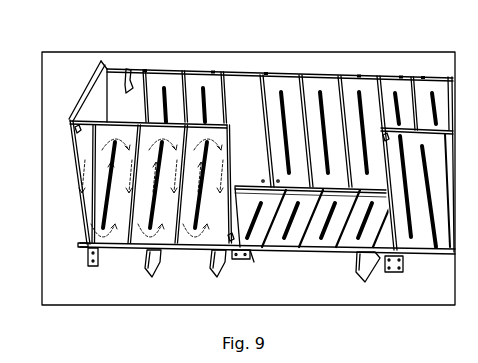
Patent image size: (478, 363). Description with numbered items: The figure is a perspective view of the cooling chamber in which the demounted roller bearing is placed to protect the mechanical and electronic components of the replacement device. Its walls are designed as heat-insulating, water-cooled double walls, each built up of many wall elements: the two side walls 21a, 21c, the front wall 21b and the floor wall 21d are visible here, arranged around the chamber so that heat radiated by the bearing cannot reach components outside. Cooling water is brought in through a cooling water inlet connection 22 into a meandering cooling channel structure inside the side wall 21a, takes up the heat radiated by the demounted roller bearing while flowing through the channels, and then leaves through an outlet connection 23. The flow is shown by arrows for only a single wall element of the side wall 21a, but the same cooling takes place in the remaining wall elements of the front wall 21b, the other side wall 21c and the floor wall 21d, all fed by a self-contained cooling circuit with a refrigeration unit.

The side wall 21a is at (113, 239).
The front wall 21b is at (82, 94).
The side wall 21c is at (164, 67).
The floor wall 21d is at (332, 243).
The cooling water inlet connection 22 is at (72, 128).
The outlet connection 23 is at (231, 258).